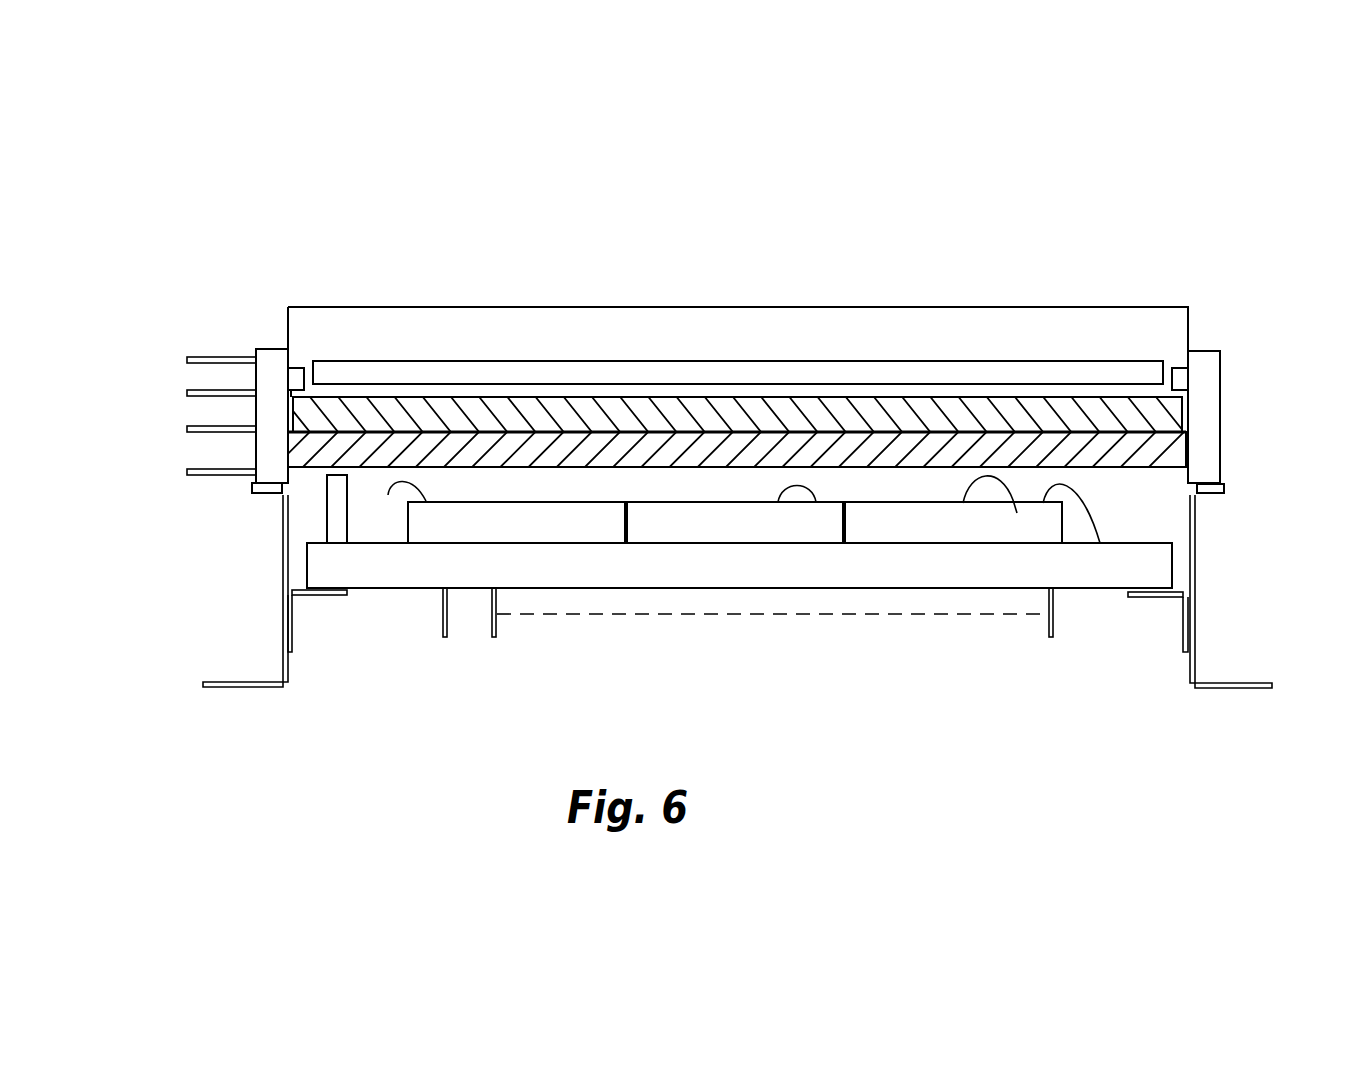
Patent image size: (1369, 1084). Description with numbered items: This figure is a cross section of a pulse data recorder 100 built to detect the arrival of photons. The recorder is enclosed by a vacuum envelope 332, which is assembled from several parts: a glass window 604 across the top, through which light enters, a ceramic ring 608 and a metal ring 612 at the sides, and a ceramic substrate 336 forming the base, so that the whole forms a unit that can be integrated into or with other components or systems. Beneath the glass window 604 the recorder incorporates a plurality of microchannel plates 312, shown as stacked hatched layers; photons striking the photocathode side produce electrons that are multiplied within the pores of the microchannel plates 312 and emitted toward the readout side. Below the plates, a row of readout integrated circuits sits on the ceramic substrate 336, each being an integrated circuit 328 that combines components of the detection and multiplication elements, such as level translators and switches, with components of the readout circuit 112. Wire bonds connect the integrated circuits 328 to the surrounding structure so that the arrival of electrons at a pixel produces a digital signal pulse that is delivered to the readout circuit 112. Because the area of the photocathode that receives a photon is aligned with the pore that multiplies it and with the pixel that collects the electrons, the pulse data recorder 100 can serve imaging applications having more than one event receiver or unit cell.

The pulse data recorder 100 is at (1018, 218).
The readout circuit 112 is at (308, 552).
The microchannel plate 312 is at (503, 373).
The integrated circuit 328 is at (388, 495).
The vacuum envelope 332 is at (342, 318).
The ceramic substrate 336 is at (1085, 572).
The glass window 604 is at (740, 308).
The ceramic ring 608 is at (1210, 351).
The metal ring 612 is at (1195, 535).